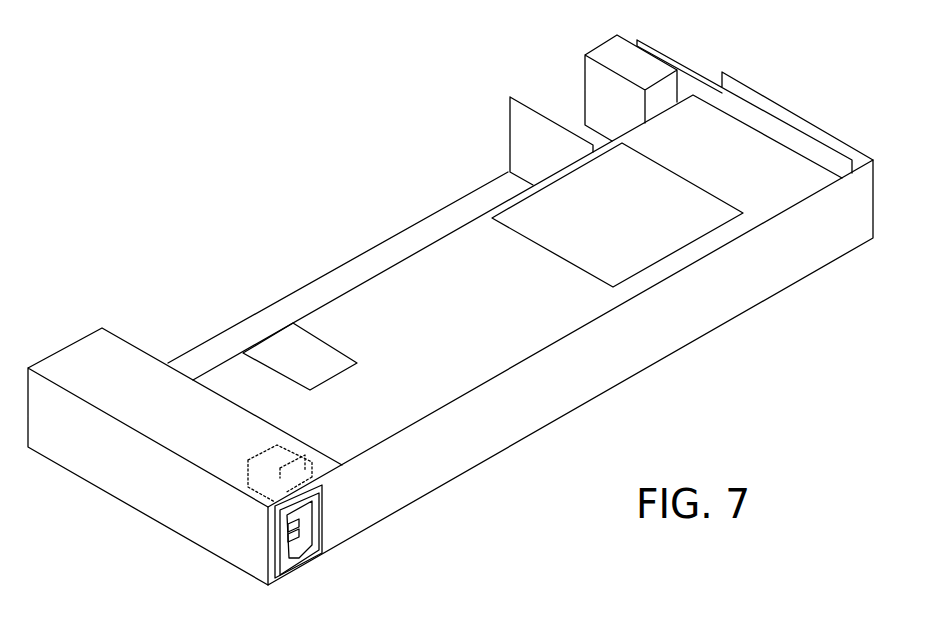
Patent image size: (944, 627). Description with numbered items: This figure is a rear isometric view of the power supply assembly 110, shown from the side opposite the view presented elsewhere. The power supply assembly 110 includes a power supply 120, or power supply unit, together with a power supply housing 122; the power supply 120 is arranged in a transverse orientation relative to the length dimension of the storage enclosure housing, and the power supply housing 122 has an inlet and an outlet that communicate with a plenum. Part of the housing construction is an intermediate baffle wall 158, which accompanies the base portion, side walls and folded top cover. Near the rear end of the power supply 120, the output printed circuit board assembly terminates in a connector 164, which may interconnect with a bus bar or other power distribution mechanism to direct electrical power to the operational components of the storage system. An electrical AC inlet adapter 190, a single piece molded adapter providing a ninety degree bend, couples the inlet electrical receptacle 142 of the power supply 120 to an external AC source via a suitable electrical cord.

The power supply assembly 110 is at (228, 136).
The power supply 120 is at (393, 303).
The power supply housing 122 is at (135, 382).
The inlet electrical receptacle 142 is at (295, 442).
The intermediate baffle wall 158 is at (535, 150).
The connector 164 is at (600, 77).
The electrical AC inlet adapter 190 is at (332, 567).